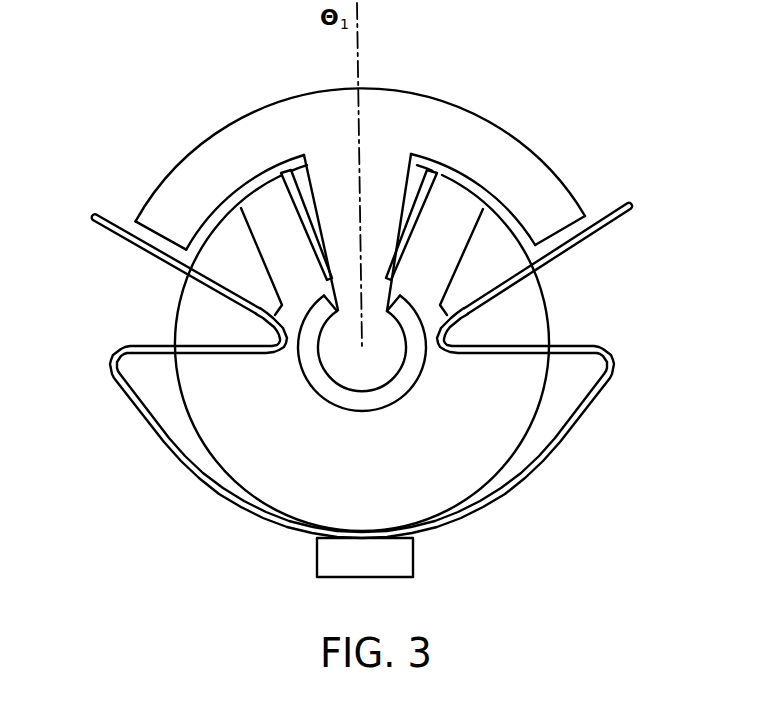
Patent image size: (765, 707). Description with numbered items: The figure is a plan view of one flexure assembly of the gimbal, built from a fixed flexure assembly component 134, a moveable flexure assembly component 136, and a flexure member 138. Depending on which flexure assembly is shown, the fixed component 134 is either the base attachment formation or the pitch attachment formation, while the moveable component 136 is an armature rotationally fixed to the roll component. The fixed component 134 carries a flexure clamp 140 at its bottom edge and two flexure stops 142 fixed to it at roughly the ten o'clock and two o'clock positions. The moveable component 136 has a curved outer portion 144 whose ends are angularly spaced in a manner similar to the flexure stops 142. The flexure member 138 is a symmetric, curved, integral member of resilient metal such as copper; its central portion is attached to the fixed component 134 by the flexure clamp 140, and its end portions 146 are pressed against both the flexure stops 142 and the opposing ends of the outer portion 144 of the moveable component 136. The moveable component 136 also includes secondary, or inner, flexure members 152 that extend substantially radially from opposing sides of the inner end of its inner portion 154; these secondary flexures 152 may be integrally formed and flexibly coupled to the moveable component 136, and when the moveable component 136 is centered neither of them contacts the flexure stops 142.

The fixed flexure assembly component 134 is at (270, 492).
The moveable flexure assembly component 136 is at (389, 91).
The flexure member 138 is at (546, 448).
The flexure clamp 140 is at (415, 553).
The flexure stops 142 is at (238, 268).
The curved outer portion 144 is at (163, 208).
The end portions 146 is at (105, 228).
The secondary flexure members 152 is at (297, 203).
The inner portion 154 is at (342, 187).